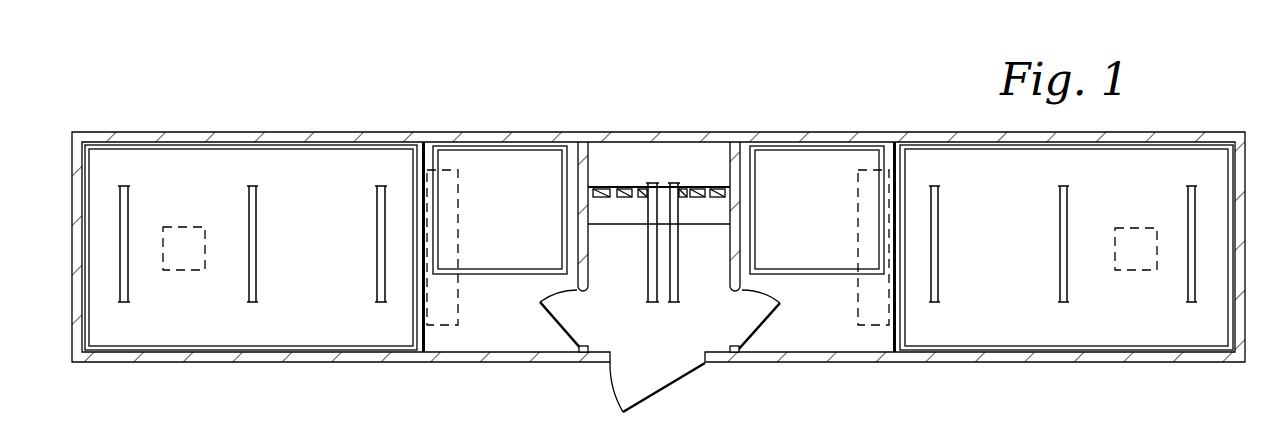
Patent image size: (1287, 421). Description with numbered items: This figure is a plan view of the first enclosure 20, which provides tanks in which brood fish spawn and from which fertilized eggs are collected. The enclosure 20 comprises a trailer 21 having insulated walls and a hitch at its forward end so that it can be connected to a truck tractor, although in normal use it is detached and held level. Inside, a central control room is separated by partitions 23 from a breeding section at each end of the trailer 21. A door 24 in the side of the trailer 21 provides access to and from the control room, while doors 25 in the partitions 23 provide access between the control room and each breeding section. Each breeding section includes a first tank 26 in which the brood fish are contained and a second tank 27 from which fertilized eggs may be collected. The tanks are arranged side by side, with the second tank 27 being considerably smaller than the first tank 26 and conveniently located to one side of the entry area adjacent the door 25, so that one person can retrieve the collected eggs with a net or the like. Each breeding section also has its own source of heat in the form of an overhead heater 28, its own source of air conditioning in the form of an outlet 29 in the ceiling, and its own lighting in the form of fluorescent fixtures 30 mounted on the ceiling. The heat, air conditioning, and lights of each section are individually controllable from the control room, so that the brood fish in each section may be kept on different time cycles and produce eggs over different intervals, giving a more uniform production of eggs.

The first enclosure 20 is at (661, 132).
The trailer 21 is at (300, 362).
The partitions 23 is at (588, 242).
The door 24 is at (670, 383).
The doors 25 is at (558, 330).
The first tank 26 is at (325, 248).
The second tank 27 is at (516, 218).
The overhead heater 28 is at (458, 297).
The outlet 29 is at (188, 226).
The fluorescent fixtures 30 is at (249, 287).